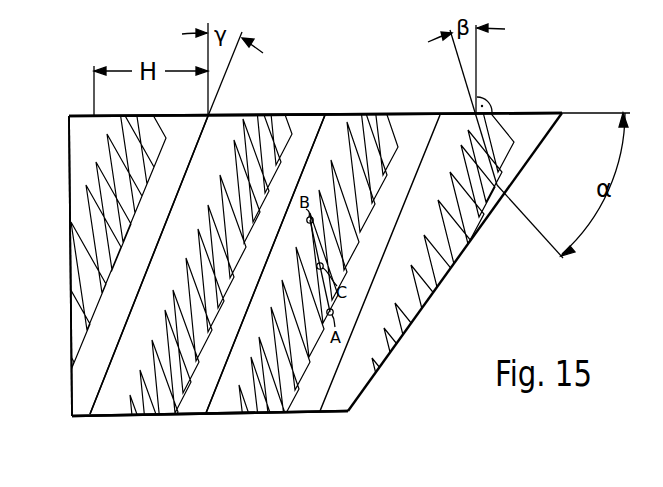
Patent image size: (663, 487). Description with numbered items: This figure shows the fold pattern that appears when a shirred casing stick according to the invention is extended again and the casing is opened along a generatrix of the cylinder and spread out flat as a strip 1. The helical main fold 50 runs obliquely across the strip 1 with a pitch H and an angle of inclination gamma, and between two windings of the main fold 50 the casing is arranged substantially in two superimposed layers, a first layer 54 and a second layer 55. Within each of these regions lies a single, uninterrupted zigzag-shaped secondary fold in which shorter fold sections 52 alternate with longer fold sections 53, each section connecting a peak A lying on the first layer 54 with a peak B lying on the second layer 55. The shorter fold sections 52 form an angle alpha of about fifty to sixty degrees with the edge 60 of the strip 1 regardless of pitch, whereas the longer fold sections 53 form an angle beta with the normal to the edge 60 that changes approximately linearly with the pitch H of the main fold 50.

The strip 1 is at (82, 200).
The helical main fold 50 is at (102, 391).
The shorter fold sections 52 is at (348, 169).
The longer fold sections 53 is at (364, 179).
The first layer 54 is at (317, 397).
The second layer 55 is at (226, 395).
The edge 60 is at (544, 112).